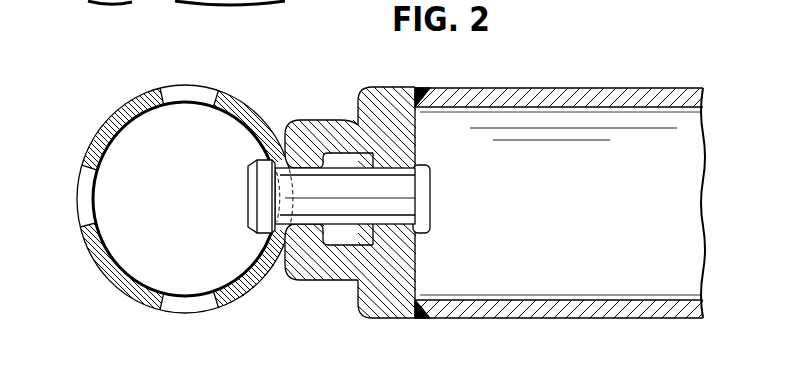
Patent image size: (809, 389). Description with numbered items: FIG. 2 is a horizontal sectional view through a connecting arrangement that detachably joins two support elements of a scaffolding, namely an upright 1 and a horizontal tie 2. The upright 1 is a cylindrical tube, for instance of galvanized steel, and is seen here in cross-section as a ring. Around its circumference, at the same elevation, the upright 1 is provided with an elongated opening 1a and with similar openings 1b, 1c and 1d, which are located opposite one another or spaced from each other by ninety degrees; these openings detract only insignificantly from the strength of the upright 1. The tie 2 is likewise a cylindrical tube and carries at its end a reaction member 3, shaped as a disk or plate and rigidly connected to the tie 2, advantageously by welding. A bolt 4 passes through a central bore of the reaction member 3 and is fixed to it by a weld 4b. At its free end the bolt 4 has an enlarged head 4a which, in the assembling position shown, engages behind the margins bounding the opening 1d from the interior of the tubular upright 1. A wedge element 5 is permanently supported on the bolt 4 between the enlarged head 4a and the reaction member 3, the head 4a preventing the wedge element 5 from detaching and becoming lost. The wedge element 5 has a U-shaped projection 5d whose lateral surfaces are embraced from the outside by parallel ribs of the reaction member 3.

The upright 1 is at (117, 107).
The elongated opening 1a is at (185, 303).
The opening 1b is at (85, 187).
The opening 1c is at (178, 93).
The elongated opening 1d is at (292, 190).
The tie 2 is at (603, 97).
The reaction member 3 is at (398, 140).
The bolt 4 is at (417, 192).
The enlarged head 4a is at (258, 198).
The weld 4b is at (415, 230).
The wedge element 5 is at (336, 112).
The U-shaped projection 5d is at (317, 255).